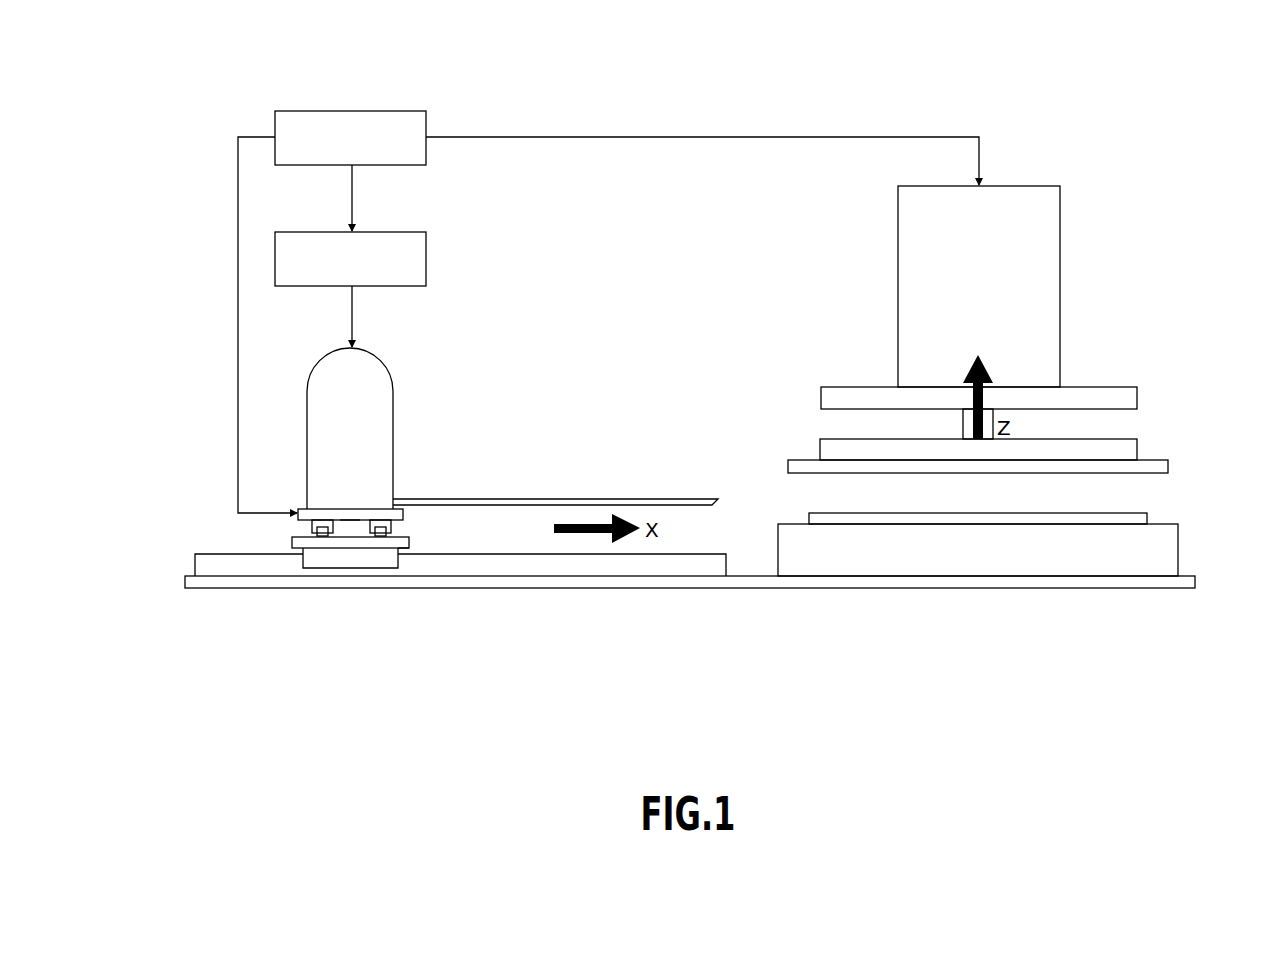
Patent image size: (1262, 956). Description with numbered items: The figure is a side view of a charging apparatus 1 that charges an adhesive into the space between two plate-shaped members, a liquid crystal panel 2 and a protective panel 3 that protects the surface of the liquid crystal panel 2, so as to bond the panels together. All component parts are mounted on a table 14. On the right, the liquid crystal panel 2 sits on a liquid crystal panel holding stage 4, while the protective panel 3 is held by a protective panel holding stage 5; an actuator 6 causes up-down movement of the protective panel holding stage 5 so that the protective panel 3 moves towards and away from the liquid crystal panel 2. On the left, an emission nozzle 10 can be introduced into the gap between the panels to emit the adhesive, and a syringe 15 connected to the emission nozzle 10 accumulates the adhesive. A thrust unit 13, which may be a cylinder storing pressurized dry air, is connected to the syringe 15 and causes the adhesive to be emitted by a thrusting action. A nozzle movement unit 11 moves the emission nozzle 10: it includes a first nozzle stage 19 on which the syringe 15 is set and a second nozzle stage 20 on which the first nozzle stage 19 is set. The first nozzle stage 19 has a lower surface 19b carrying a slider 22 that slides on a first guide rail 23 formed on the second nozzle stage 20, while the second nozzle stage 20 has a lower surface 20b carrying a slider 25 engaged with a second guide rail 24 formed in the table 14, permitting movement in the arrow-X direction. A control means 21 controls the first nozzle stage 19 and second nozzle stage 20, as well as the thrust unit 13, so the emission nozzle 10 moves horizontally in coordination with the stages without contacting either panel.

The charging apparatus 1 is at (667, 41).
The liquid crystal panel 2 is at (1147, 516).
The protective panel 3 is at (1168, 465).
The liquid crystal panel holding stage 4 is at (1178, 545).
The protective panel holding stage 5 is at (1137, 443).
The actuator 6 is at (1060, 348).
The emission nozzle 10 is at (563, 498).
The nozzle movement unit 11 is at (216, 289).
The thrust unit 13 is at (315, 232).
The table 14 is at (972, 589).
The syringe 15 is at (383, 362).
The first nozzle stage 19 is at (303, 508).
The lower surface 19b is at (347, 521).
The second nozzle stage 20 is at (353, 543).
The lower surface 20b is at (403, 558).
The control means 21 is at (315, 111).
The slider 22 is at (312, 526).
The first guide rail 23 is at (317, 531).
The second guide rail 24 is at (487, 552).
The slider 25 is at (380, 562).